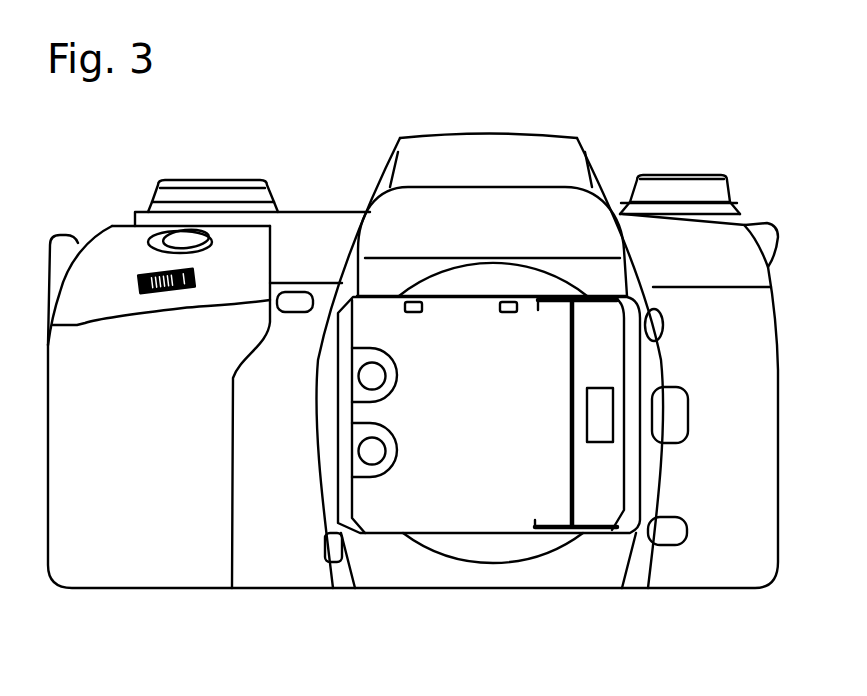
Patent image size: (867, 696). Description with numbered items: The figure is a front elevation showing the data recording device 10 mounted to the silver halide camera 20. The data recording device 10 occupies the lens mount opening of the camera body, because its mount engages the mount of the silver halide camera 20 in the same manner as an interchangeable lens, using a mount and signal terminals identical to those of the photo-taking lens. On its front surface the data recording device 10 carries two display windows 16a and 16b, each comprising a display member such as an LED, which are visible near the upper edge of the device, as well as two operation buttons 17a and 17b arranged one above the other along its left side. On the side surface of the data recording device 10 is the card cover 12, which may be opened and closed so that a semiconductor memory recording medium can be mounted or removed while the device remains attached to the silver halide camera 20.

The data recording device 10 is at (381, 537).
The card cover 12 is at (630, 358).
The display window 16a is at (414, 302).
The display window 16b is at (508, 302).
The operation button 17a is at (365, 380).
The operation button 17b is at (365, 453).
The silver halide camera 20 is at (318, 207).